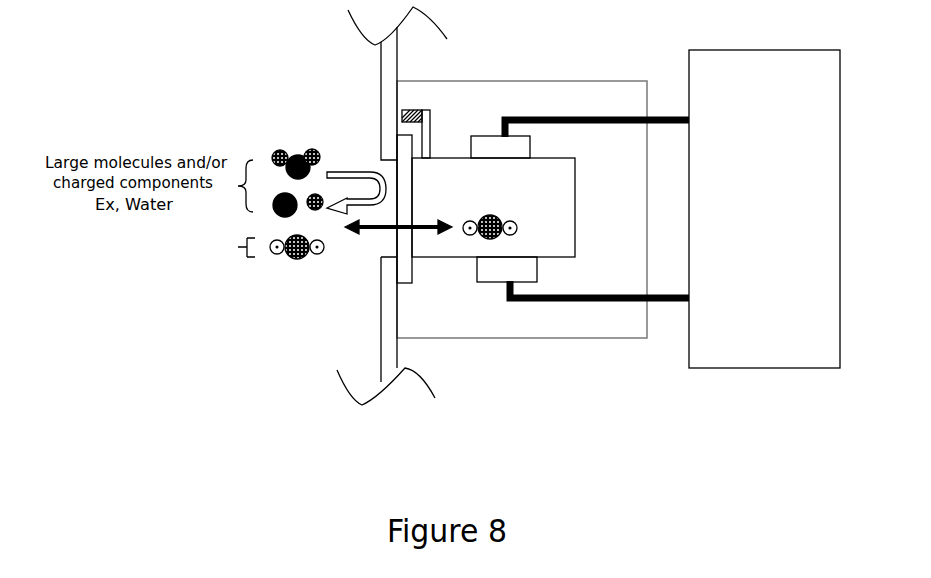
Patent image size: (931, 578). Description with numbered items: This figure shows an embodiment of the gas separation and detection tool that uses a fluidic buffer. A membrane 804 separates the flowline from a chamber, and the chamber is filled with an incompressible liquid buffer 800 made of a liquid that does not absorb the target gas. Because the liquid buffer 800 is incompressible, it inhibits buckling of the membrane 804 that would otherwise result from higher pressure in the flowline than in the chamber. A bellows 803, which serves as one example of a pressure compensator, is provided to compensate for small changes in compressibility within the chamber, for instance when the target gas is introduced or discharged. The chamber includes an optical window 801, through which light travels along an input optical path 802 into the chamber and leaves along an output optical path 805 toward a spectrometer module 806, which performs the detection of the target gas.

The liquid buffer 800 is at (449, 243).
The optical window 801 is at (503, 147).
The input optical path 802 is at (568, 307).
The bellows 803 is at (406, 109).
The membrane 804 is at (393, 238).
The output optical path 805 is at (555, 115).
The spectrometer module 806 is at (764, 209).